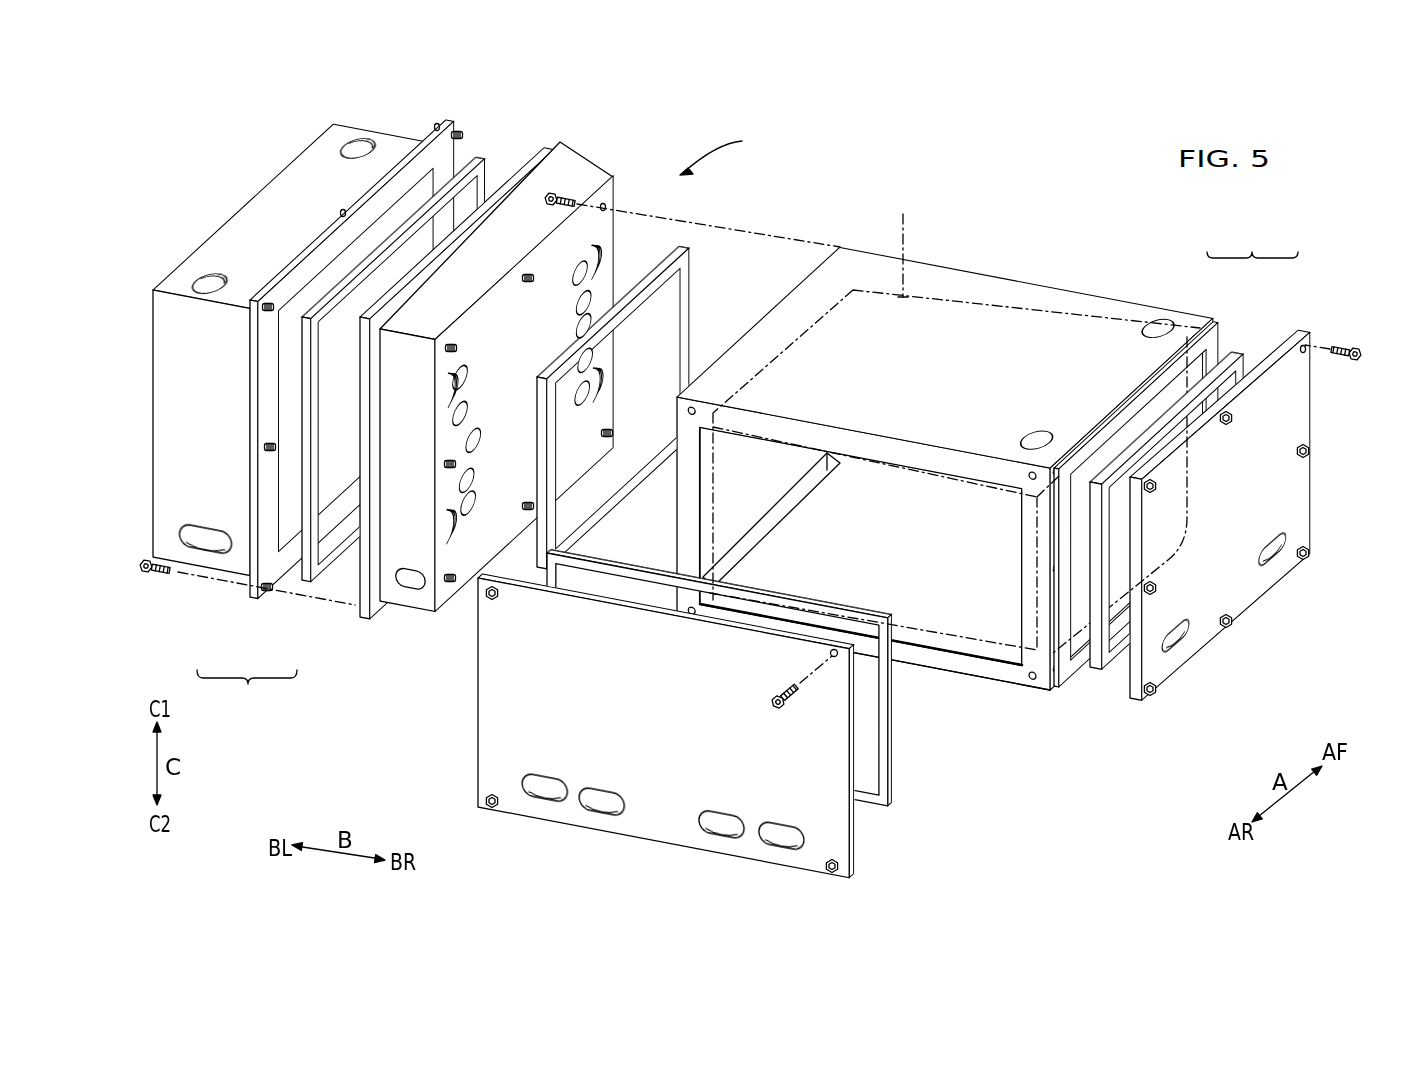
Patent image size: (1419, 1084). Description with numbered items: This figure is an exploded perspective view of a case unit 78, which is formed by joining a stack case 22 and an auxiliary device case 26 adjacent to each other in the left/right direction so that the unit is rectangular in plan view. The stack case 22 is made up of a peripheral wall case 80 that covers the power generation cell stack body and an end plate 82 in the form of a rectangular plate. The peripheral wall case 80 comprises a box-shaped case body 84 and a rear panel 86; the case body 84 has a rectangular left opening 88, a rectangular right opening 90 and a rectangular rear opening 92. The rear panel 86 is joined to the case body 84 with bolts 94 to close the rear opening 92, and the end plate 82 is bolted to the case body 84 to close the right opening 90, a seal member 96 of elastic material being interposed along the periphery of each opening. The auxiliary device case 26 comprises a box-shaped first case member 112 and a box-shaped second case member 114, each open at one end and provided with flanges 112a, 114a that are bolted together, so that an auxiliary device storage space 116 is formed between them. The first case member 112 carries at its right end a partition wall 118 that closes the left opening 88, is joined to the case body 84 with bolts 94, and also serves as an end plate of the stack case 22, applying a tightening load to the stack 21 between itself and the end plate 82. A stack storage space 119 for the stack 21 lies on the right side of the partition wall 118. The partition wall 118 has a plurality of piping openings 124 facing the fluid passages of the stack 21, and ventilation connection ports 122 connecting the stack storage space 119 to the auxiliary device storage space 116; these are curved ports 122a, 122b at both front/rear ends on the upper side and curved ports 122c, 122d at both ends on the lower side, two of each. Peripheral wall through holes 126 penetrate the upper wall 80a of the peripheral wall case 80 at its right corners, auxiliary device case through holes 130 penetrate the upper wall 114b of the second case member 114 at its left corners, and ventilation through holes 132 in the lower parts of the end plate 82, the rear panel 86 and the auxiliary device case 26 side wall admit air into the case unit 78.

The stack 21 is at (904, 243).
The stack case 22 is at (1252, 241).
The auxiliary device case 26 is at (247, 688).
The case unit 78 is at (723, 152).
The peripheral wall case 80 is at (954, 497).
The upper wall 80a is at (968, 282).
The end plate 82 is at (1300, 330).
The case body 84 is at (1007, 677).
The rear panel 86 is at (660, 830).
The left opening 88 is at (773, 507).
The right opening 90 is at (1073, 635).
The rear opening 92 is at (943, 640).
The bolts 94 is at (562, 194).
The seal member 96 is at (482, 160).
The first case member 112 is at (460, 420).
The flange 112a is at (376, 616).
The second case member 114 is at (292, 396).
The flange 114a is at (258, 390).
The upper wall 114b is at (265, 200).
The auxiliary device storage space 116 is at (413, 250).
The partition wall 118 is at (600, 227).
The stack storage space 119 is at (980, 623).
The ventilation connection ports 122 is at (823, 422).
The ventilation connection ports 122a is at (452, 375).
The ventilation connection ports 122b is at (600, 252).
The ventilation connection ports 122c is at (460, 535).
The ventilation connection ports 122d is at (605, 386).
The piping openings 124 is at (578, 303).
The peripheral wall through holes 126 is at (1160, 320).
The auxiliary device case through holes 130 is at (345, 148).
The ventilation through holes 132 is at (197, 545).